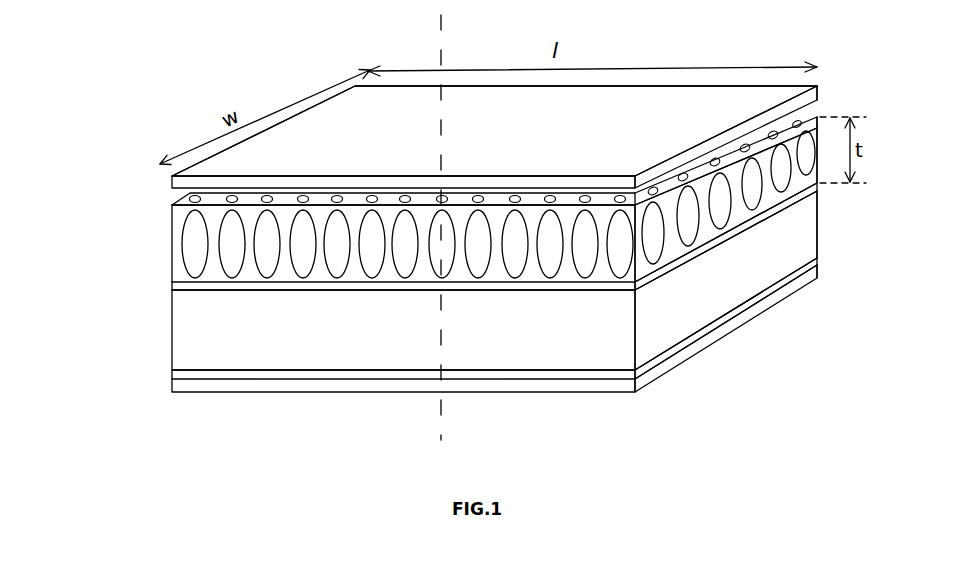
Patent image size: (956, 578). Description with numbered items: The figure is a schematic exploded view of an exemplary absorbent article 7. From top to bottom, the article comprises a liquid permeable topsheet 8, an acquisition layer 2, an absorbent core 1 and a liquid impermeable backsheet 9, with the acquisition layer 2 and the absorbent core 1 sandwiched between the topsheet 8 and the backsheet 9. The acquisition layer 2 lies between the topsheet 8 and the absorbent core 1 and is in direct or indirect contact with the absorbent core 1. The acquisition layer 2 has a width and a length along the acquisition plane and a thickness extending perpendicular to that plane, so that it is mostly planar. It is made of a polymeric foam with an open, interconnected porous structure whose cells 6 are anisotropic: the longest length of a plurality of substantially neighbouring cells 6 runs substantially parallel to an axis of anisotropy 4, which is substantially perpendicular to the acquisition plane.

The absorbent core 1 is at (172, 333).
The acquisition layer 2 is at (172, 252).
The axis of anisotropy 4 is at (445, 22).
The cells 6 is at (792, 171).
The absorbent article 7 is at (120, 63).
The topsheet 8 is at (172, 183).
The backsheet 9 is at (172, 392).